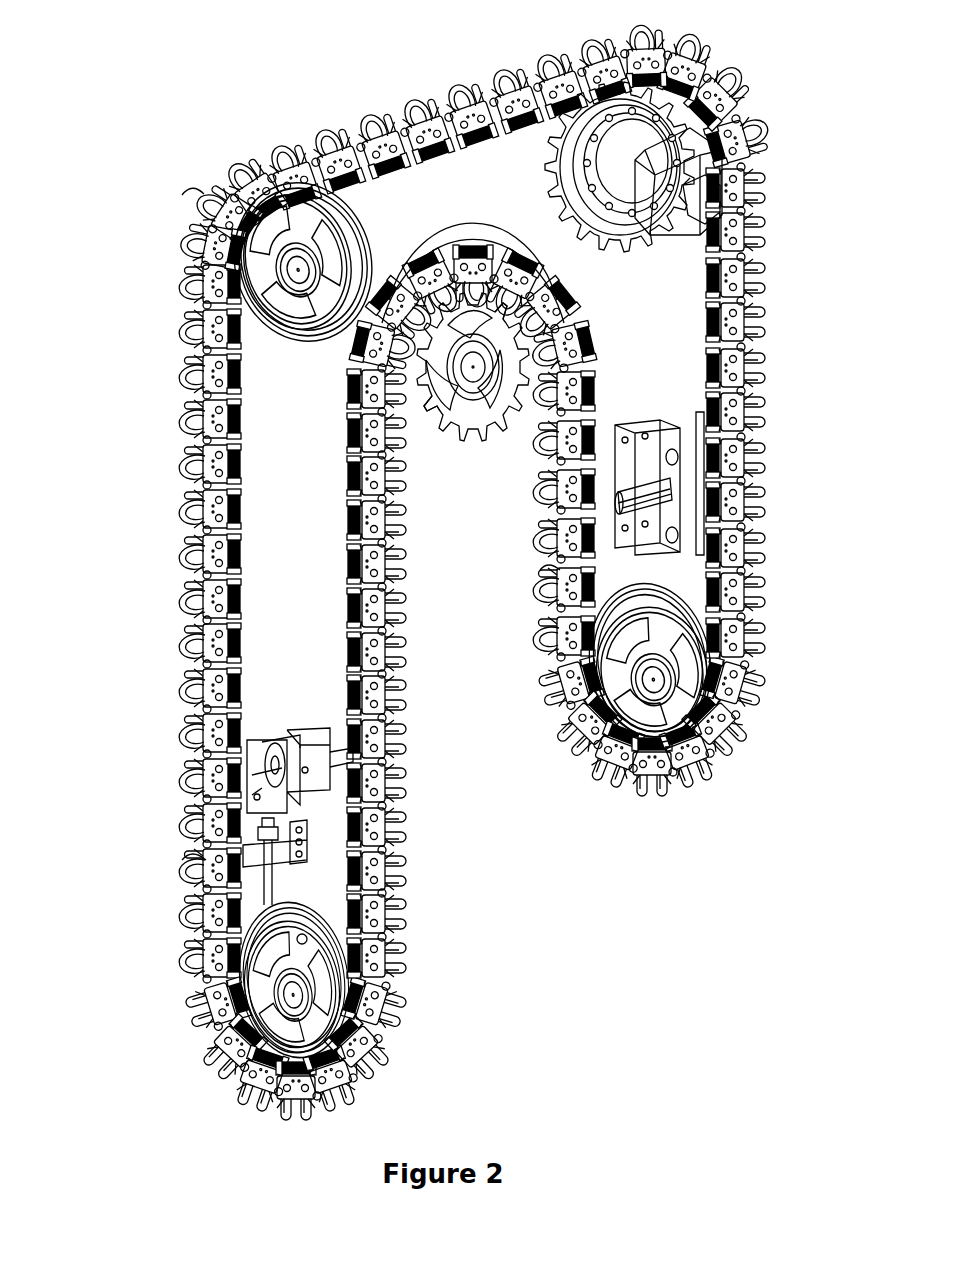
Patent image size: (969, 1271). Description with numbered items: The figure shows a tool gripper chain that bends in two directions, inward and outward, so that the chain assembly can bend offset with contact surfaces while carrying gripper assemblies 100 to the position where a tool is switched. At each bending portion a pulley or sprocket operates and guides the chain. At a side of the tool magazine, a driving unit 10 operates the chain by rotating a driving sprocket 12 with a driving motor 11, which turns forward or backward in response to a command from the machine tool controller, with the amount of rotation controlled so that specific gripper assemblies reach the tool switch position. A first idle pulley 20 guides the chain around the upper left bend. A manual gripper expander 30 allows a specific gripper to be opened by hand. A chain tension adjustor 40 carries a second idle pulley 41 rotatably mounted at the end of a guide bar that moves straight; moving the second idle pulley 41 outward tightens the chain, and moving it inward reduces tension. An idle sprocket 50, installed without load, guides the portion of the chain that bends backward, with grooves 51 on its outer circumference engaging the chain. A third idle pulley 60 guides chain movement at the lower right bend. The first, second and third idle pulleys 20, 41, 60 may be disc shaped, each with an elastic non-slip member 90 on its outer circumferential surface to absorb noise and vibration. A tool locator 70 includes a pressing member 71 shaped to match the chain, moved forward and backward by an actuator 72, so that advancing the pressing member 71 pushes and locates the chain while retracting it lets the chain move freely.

The gripper assembly 100 is at (141, 108).
The driving unit 10 is at (752, 115).
The driving motor 11 is at (655, 207).
The driving sprocket 12 is at (572, 166).
The first idle pulley 20 is at (365, 210).
The manual gripper expander 30 is at (277, 725).
The chain tension adjustor 40 is at (318, 895).
The second idle pulley 41 is at (340, 925).
The idle sprocket 50 is at (458, 480).
The grooves 51 is at (453, 432).
The third idle pulley 60 is at (700, 597).
The tool locator 70 is at (655, 422).
The pressing member 71 is at (678, 445).
The actuator 72 is at (706, 440).
The non-slip member 90 is at (218, 204).